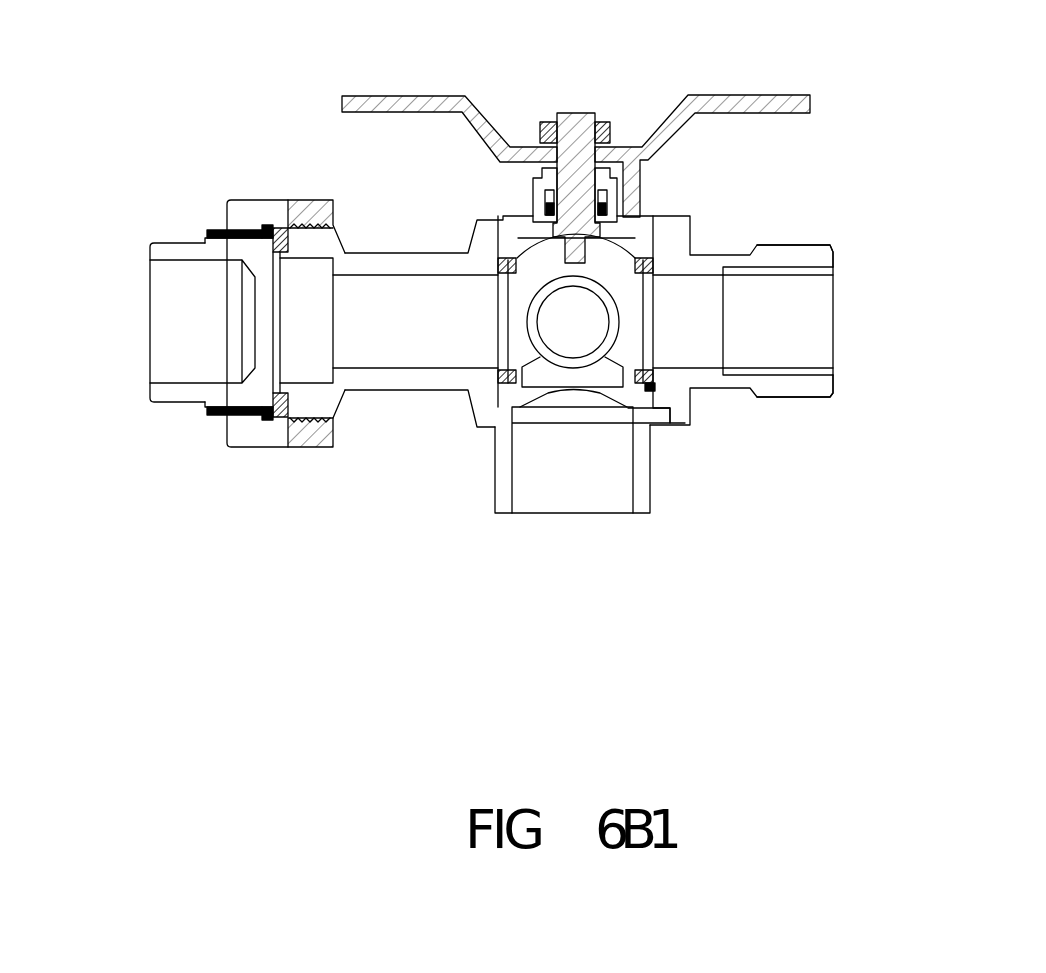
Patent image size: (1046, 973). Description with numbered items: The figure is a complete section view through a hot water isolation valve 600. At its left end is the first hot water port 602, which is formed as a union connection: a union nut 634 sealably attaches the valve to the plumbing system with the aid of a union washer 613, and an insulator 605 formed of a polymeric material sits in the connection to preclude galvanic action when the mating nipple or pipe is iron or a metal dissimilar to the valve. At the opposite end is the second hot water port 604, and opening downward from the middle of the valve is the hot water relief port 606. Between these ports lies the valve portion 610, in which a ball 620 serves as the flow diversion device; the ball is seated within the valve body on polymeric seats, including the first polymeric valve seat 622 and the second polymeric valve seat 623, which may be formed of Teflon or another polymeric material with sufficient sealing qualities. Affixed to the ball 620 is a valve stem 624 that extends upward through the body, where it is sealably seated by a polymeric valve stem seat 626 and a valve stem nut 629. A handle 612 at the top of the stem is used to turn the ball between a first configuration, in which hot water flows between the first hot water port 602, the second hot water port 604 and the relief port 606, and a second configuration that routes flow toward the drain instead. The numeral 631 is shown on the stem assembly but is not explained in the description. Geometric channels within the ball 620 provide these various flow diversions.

The hot water isolation valve 600 is at (795, 450).
The first hot water port 602 is at (147, 322).
The second hot water port 604 is at (835, 320).
The insulator 605 is at (207, 228).
The hot water relief port 606 is at (573, 518).
The valve portion 610 is at (773, 252).
The handle 612 is at (357, 107).
The union washer 613 is at (275, 227).
The ball 620 is at (612, 250).
The first polymeric valve seat 622 is at (427, 262).
The second polymeric valve seat 623 is at (637, 392).
The valve stem 624 is at (570, 107).
The polymeric valve stem seat 626 is at (533, 210).
The valve stem nut 629 is at (540, 175).
The stem nut 631 is at (543, 120).
The union nut 634 is at (243, 430).